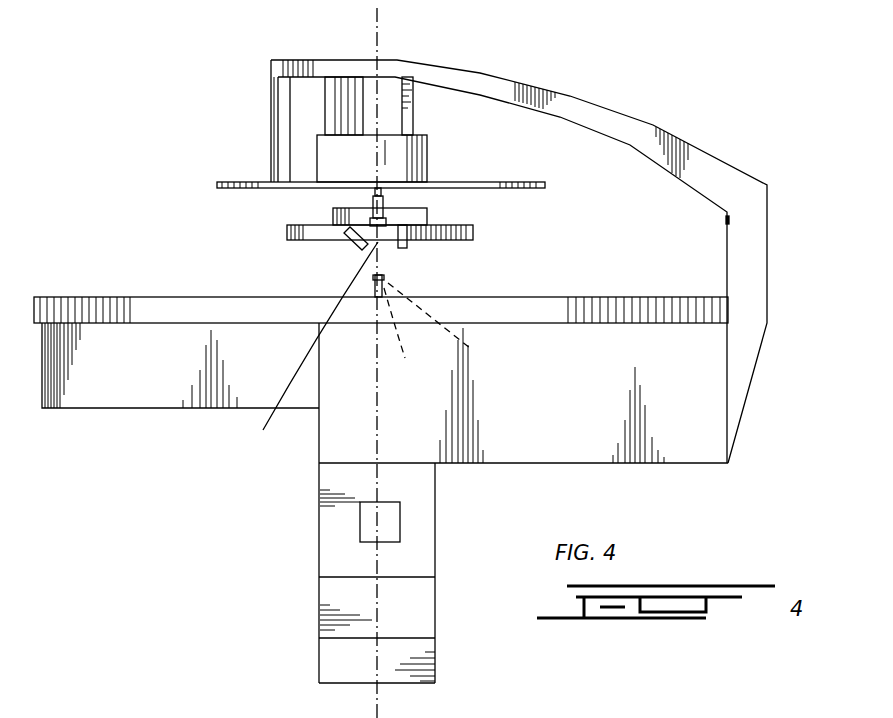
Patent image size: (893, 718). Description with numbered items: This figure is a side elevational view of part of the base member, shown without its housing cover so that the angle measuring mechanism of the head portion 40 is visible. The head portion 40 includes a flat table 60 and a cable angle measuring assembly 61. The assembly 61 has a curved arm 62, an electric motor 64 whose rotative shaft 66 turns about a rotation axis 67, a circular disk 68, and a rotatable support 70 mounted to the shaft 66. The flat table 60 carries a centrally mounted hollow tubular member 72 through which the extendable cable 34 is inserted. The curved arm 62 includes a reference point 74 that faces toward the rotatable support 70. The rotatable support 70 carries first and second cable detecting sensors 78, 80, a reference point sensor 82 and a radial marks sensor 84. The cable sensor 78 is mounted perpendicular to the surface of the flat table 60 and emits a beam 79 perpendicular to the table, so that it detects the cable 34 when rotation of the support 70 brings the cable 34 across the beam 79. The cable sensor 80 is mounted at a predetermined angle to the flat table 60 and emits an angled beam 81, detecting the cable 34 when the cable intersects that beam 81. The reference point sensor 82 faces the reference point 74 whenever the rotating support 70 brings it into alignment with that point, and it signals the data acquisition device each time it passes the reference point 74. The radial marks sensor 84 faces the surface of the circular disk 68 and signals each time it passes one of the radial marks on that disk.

The extendable cable 34 is at (383, 275).
The head portion 40 is at (679, 112).
The flat table 60 is at (90, 312).
The cable angle measuring assembly 61 is at (298, 74).
The curved arm 62 is at (723, 172).
The electric motor 64 is at (272, 100).
The rotative shaft 66 is at (373, 188).
The rotation axis 67 is at (380, 13).
The circular disk 68 is at (508, 180).
The rotatable support 70 is at (405, 237).
The hollow tubular member 72 is at (387, 274).
The reference point 74 is at (727, 222).
The first cable detecting sensor 78 is at (430, 225).
The beam 79 is at (449, 323).
The second cable detecting sensor 80 is at (357, 247).
The beam 81 is at (402, 338).
The reference point sensor 82 is at (310, 353).
The radial marks sensor 84 is at (332, 210).